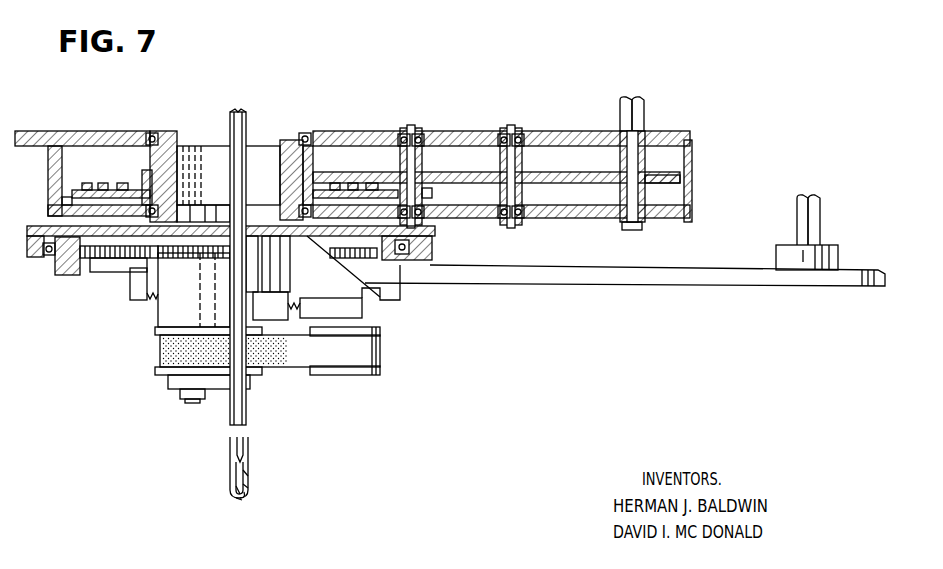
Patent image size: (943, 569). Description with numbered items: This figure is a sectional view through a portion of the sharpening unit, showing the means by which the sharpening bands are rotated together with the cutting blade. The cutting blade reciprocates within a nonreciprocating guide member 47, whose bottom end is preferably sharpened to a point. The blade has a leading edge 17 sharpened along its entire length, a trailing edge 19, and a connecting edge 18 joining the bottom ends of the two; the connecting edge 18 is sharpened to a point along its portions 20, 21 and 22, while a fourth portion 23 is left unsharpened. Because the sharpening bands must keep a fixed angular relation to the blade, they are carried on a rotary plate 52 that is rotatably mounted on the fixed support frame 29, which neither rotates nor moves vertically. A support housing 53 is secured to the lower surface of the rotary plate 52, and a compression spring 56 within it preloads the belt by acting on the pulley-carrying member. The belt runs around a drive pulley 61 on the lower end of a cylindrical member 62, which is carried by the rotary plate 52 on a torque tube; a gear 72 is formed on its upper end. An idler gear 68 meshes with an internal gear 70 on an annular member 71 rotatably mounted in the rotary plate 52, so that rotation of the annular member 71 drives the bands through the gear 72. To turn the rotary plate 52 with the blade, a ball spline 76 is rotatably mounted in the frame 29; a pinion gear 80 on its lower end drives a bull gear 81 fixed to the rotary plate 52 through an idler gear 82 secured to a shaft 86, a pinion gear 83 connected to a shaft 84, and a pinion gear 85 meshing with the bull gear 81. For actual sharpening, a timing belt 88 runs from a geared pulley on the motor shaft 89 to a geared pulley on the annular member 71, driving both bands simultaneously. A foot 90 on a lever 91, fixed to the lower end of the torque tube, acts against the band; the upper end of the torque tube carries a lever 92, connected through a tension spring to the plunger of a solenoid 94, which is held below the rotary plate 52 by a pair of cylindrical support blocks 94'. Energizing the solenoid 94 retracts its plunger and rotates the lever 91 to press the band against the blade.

The leading edge 17 is at (230, 461).
The connecting edge 18 is at (240, 502).
The trailing edge 19 is at (250, 462).
The sharpened portion 20 is at (240, 495).
The sharpened portion 21 is at (246, 497).
The sharpened portion 22 is at (250, 487).
The fourth portion 23 is at (250, 477).
The fixed support frame 29 is at (700, 163).
The guide member 47 is at (250, 410).
The rotary plate 52 is at (436, 253).
The support housing 53 is at (383, 306).
The compression spring 56 is at (300, 300).
The drive pulley 61 is at (158, 371).
The cylindrical member 62 is at (157, 317).
The idler gear 68 is at (106, 276).
The internal gear 70 is at (363, 258).
The annular member 71 is at (77, 275).
The gear 72 is at (194, 286).
The ball spline 76 is at (647, 118).
The pinion gear 80 is at (663, 185).
The bull gear 81 is at (72, 191).
The idler gear 82 is at (556, 186).
The pinion gear 83 is at (384, 175).
The shaft 84 is at (422, 155).
The pinion gear 85 is at (432, 198).
The shaft 86 is at (513, 160).
The timing belt 88 is at (637, 286).
The shaft 89 is at (822, 230).
The foot 90 is at (255, 374).
The lever 91 is at (221, 386).
The lever 92 is at (197, 242).
The solenoid 94 is at (276, 306).
The cylindrical support blocks 94' is at (285, 264).